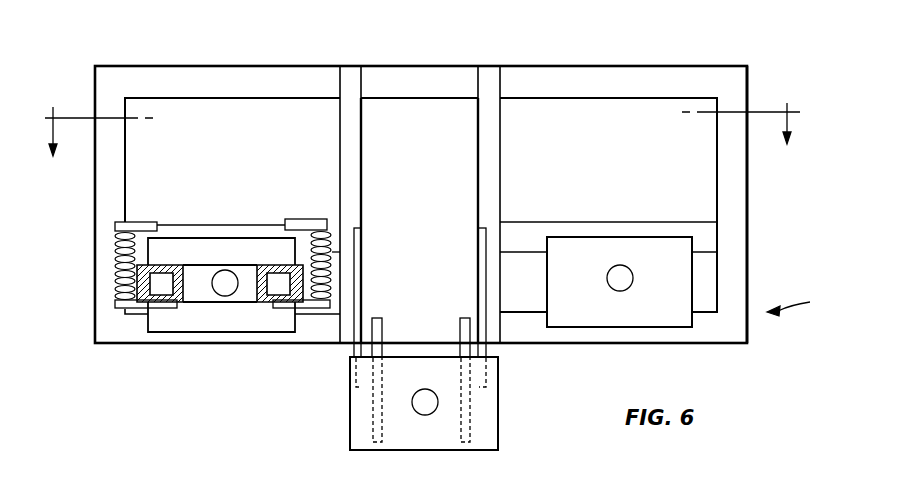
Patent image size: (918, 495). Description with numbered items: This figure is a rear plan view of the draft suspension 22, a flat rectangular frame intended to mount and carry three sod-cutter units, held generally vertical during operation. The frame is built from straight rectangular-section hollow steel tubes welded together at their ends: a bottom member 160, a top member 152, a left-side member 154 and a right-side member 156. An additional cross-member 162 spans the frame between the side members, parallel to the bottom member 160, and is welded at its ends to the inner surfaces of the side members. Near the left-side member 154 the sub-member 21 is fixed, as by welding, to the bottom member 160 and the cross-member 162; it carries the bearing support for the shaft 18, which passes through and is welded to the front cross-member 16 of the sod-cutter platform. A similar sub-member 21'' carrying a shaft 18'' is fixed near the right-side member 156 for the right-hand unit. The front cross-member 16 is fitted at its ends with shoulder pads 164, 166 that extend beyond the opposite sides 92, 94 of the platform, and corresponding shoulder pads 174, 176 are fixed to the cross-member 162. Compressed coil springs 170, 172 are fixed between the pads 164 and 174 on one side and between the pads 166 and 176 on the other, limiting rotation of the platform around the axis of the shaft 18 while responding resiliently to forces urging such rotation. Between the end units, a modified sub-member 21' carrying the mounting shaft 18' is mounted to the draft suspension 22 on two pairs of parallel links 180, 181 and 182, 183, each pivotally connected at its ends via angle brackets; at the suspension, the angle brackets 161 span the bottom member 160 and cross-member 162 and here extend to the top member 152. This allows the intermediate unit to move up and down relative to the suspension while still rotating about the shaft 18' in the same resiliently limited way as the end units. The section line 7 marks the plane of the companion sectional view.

The section line 7- 7 is at (422, 142).
The front cross-member 16 is at (195, 296).
The shaft 18 is at (233, 243).
The mounting shaft 18' is at (379, 418).
The shaft 18'' is at (639, 237).
The sub-member 21 is at (221, 313).
The modified sub-member 21' is at (454, 403).
The sub-member 21'' is at (619, 315).
The draft suspension 22 is at (806, 310).
The side of platform 92 is at (160, 285).
The side of platform 94 is at (268, 308).
The top member 152 is at (412, 66).
The left-side member 154 is at (100, 177).
The right-side member 156 is at (740, 228).
The bottom member 160 is at (197, 343).
The angle brackets 161 is at (361, 143).
The cross-member 162 is at (190, 225).
The shoulder pad 164 is at (167, 310).
The shoulder pad 166 is at (315, 308).
The compressed coil spring 170 is at (117, 265).
The compressed coil spring 172 is at (328, 234).
The shoulder pad 174 is at (138, 222).
The shoulder pad 176 is at (305, 219).
The parallel link 180 is at (382, 325).
The parallel link 181 is at (362, 263).
The parallel link 182 is at (462, 320).
The parallel link 183 is at (478, 250).